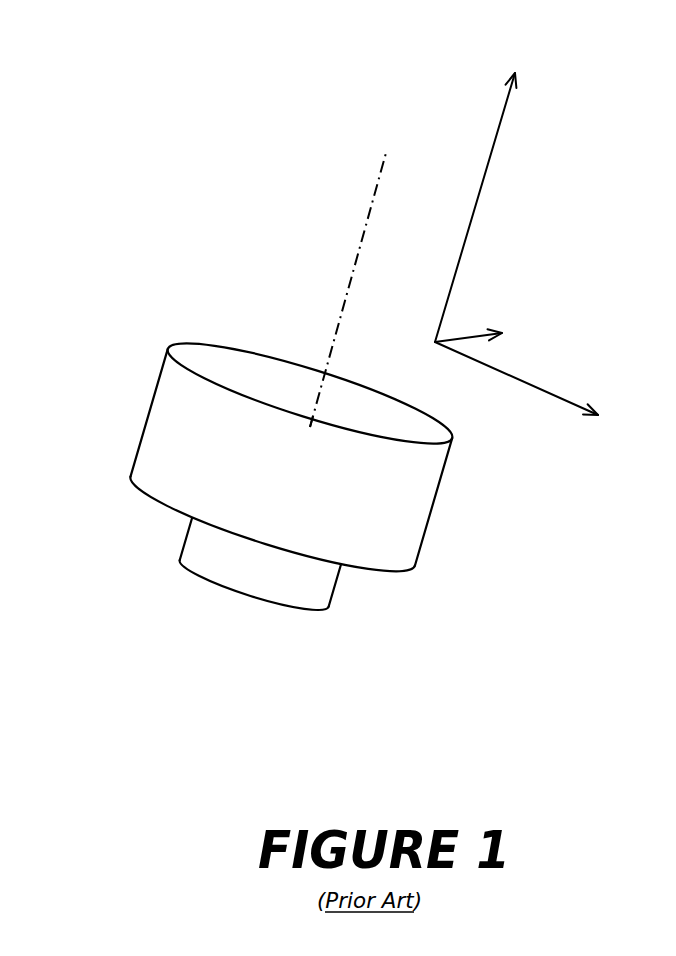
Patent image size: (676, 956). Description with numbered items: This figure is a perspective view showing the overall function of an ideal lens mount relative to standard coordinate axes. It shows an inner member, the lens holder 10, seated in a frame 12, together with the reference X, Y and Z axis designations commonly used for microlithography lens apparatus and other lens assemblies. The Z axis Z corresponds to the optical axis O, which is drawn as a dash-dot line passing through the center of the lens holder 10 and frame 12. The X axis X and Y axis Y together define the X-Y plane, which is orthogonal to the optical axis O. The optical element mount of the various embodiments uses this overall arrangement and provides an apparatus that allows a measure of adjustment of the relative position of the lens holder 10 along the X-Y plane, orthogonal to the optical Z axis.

The lens holder 10 is at (187, 535).
The frame 12 is at (145, 427).
The optical axis O is at (355, 268).
The X axis X is at (485, 333).
The Y axis Y is at (534, 395).
The Z axis Z is at (485, 183).